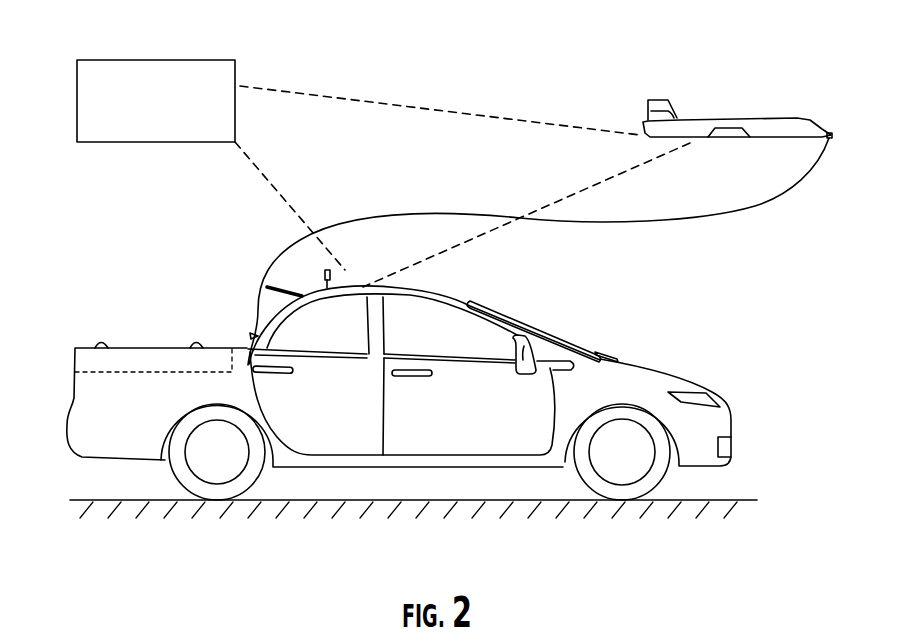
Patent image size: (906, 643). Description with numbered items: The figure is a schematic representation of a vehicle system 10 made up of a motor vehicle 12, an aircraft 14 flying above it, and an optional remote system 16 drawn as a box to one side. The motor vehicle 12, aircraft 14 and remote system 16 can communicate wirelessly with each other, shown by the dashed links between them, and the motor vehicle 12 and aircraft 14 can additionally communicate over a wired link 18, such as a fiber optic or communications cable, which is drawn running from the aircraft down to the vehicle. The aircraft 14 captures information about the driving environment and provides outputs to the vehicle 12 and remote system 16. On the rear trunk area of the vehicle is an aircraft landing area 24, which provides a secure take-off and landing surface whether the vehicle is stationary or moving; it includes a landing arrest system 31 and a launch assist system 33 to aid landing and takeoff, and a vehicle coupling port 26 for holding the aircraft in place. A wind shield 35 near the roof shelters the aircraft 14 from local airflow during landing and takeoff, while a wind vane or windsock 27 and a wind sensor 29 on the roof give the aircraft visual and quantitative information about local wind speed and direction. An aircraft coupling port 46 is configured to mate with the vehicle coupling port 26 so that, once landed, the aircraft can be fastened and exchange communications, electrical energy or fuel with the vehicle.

The vehicle system 10 is at (650, 62).
The motor vehicle 12 is at (636, 311).
The aircraft 14 is at (747, 99).
The remote system 16 is at (166, 60).
The wired link 18 is at (735, 218).
The aircraft landing area 24 is at (121, 360).
The vehicle coupling port 26 is at (823, 133).
The wind vane or windsock 27 is at (366, 256).
The wind sensor 29 is at (331, 274).
The landing arrest system 31 is at (149, 312).
The launch assist system 33 is at (194, 343).
The wind shield 35 is at (282, 284).
The aircraft coupling port 46 is at (272, 385).